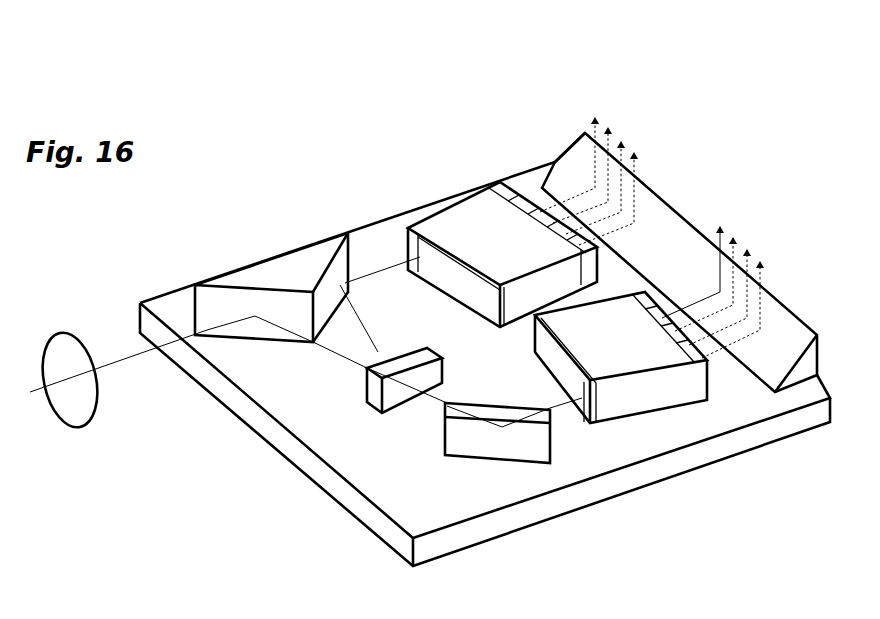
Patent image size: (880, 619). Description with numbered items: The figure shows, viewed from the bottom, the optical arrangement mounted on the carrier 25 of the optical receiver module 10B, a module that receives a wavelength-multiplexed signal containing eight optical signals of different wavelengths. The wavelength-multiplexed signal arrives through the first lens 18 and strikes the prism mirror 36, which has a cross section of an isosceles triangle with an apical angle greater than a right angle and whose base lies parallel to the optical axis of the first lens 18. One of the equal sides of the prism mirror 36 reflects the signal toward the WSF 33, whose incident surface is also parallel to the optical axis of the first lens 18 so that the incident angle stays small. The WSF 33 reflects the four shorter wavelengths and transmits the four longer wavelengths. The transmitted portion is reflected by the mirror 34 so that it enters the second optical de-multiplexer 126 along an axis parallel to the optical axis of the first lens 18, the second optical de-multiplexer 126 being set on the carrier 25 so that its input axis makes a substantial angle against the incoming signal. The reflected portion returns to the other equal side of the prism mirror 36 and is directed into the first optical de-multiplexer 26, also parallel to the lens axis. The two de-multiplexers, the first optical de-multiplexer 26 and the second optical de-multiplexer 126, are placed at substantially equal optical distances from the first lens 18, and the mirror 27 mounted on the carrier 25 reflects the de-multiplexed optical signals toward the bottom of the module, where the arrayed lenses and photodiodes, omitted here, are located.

The optical receiver module 10B is at (302, 112).
The first lens 18 is at (62, 335).
The carrier 25 is at (463, 500).
The first optical de-multiplexer 26 is at (467, 233).
The mirror 27 is at (790, 330).
The WSF 33 is at (367, 392).
The mirror 34 is at (460, 442).
The prism mirror 36 is at (283, 272).
The second optical de-multiplexer 126 is at (627, 357).